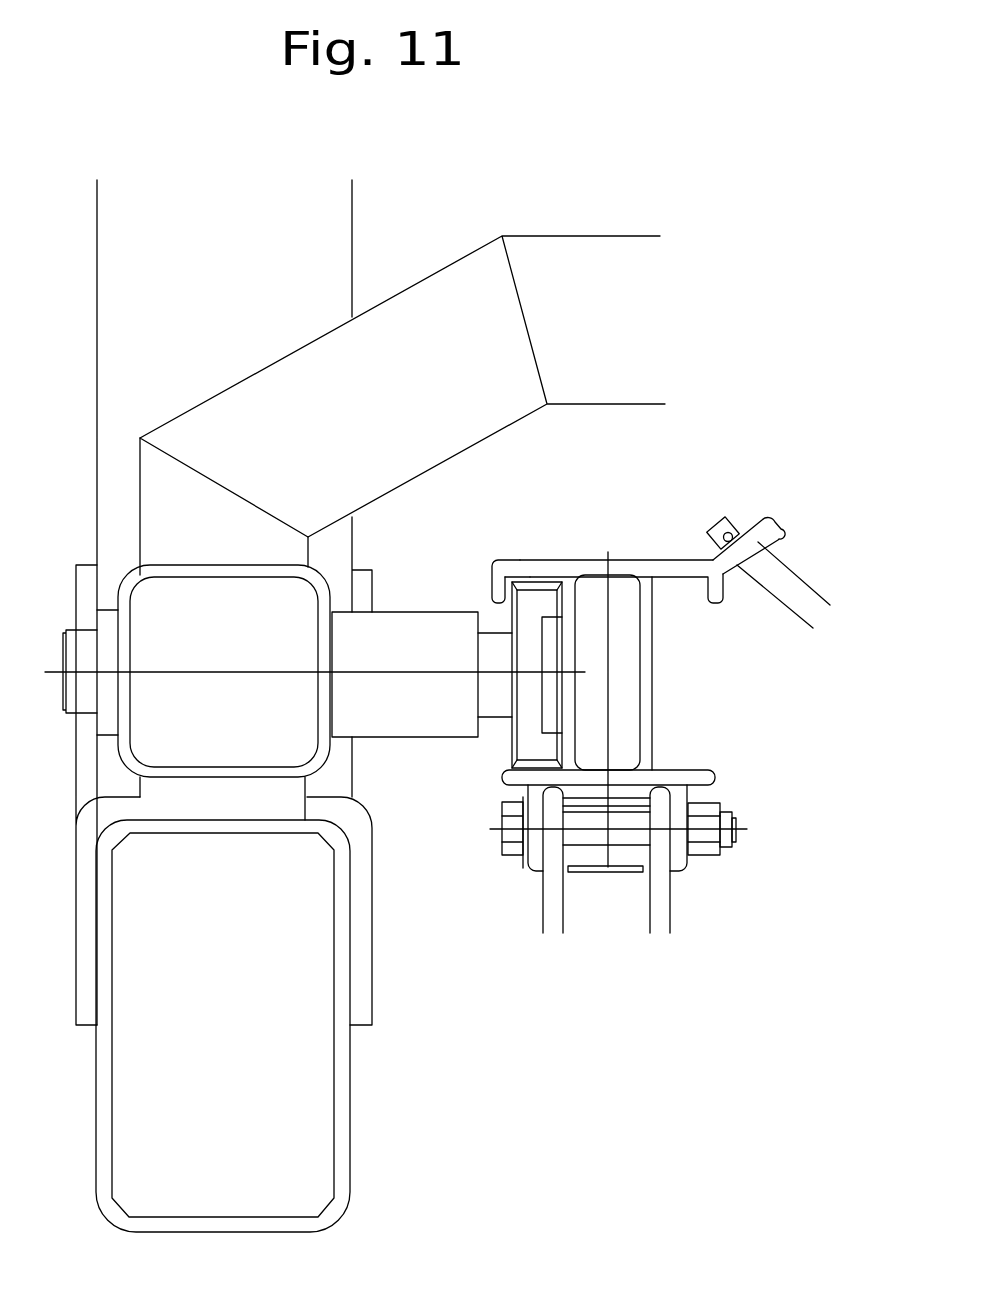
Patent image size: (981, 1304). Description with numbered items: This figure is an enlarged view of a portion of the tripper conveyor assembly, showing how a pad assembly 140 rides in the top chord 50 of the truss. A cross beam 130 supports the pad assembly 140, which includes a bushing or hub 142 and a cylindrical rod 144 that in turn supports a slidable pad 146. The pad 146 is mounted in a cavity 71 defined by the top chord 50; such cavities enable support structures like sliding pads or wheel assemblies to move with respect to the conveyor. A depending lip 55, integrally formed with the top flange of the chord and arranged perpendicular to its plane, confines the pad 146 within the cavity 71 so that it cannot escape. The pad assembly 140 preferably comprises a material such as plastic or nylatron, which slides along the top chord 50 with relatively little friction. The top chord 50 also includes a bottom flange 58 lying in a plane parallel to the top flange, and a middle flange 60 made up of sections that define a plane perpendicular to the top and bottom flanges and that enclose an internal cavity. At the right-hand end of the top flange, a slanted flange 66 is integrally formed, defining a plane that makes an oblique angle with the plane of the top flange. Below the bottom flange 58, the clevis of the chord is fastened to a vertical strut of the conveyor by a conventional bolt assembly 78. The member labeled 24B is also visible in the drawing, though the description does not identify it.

The cross beam 130 is at (572, 237).
The pad assembly 140 is at (283, 542).
The bushing or hub 142 is at (388, 738).
The cylindrical rod 144 is at (500, 717).
The slidable pad 146 is at (513, 648).
The depending lip 55 is at (490, 575).
The cavity 71 is at (487, 603).
The top chord 50 is at (582, 545).
The middle flange 60 is at (671, 719).
The bottom flange 58 is at (713, 770).
The bolt assembly 78 is at (497, 845).
The slanted flange 66 is at (777, 522).
The frame rod 24B is at (797, 617).